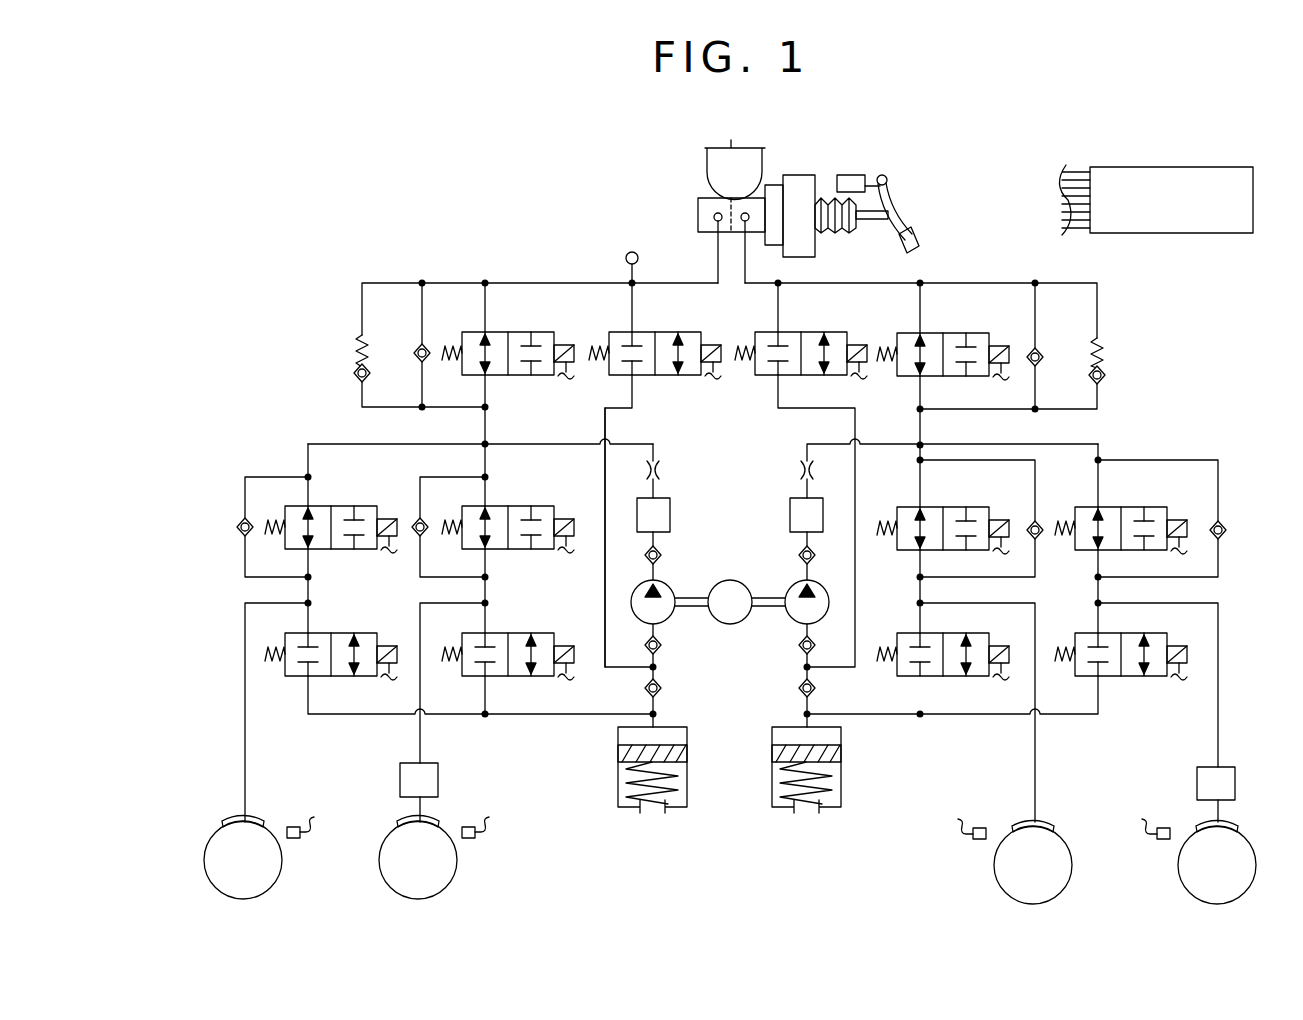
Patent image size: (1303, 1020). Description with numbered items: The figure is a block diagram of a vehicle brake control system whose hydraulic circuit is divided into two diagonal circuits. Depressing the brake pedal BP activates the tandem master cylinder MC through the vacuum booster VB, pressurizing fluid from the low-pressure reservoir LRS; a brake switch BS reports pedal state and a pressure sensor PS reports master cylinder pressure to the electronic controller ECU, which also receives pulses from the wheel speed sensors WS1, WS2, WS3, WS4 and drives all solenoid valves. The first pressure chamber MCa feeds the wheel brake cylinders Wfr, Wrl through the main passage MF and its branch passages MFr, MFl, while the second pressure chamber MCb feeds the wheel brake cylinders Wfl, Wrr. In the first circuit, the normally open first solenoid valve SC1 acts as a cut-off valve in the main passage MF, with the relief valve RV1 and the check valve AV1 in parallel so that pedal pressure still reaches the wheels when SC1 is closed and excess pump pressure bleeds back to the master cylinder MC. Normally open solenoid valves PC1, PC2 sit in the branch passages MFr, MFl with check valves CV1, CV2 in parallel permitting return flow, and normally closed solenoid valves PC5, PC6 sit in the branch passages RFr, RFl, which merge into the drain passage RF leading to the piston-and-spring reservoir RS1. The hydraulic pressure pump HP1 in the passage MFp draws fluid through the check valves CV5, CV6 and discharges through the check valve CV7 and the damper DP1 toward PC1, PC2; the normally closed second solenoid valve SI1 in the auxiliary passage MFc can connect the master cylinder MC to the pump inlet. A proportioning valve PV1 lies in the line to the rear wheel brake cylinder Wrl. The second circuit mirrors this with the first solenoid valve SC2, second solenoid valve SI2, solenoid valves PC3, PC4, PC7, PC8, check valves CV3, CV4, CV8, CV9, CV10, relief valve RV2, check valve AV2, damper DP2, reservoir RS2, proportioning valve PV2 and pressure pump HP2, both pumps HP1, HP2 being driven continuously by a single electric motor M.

The low-pressure reservoir LRS is at (708, 168).
The master cylinder MC is at (698, 209).
The first pressure chamber MCa is at (715, 232).
The second pressure chamber MCb is at (752, 232).
The vacuum booster VB is at (815, 245).
The brake switch BS is at (848, 175).
The brake pedal BP is at (896, 213).
The pressure sensor PS is at (626, 257).
The electronic controller ECU is at (1156, 200).
The relief valve RV1 is at (356, 356).
The relief valve RV2 is at (1104, 370).
The check valve AV1 is at (414, 355).
The check valve AV2 is at (1043, 355).
The first solenoid valve SC1 is at (508, 333).
The first solenoid valve SC2 is at (945, 334).
The second solenoid valve SI1 is at (655, 333).
The second solenoid valve SI2 is at (803, 333).
The main passage MF is at (485, 437).
The branch passage MFr is at (309, 470).
The branch passage MFl is at (486, 470).
The auxiliary passage MFc is at (607, 440).
The passage MFp is at (655, 456).
The damper DP1 is at (672, 517).
The damper DP2 is at (790, 517).
The check valve CV1 is at (250, 517).
The check valve CV2 is at (425, 517).
The check valve CV3 is at (1027, 530).
The check valve CV4 is at (1210, 530).
The check valve CV5 is at (662, 688).
The check valve CV6 is at (662, 645).
The check valve CV7 is at (662, 555).
The check valve CV8 is at (800, 688).
The check valve CV9 is at (800, 645).
The check valve CV10 is at (800, 555).
The hydraulic pressure pump HP1 is at (670, 587).
The pressure pump HP2 is at (792, 587).
The electric motor M is at (730, 602).
The reservoir RS1 is at (618, 754).
The reservoir RS2 is at (842, 754).
The drain passage RF is at (517, 716).
The branch passage RFr is at (346, 716).
The branch passage RFl is at (486, 700).
The solenoid valve PC1 is at (331, 506).
The solenoid valve PC2 is at (508, 506).
The solenoid valve PC3 is at (943, 507).
The solenoid valve PC4 is at (1121, 507).
The solenoid valve PC5 is at (332, 633).
The solenoid valve PC6 is at (509, 633).
The solenoid valve PC7 is at (943, 633).
The solenoid valve PC8 is at (1121, 633).
The proportioning valve PV1 is at (400, 780).
The proportioning valve PV2 is at (1197, 784).
The wheel brake cylinder Wfr is at (226, 822).
The wheel brake cylinder Wrl is at (402, 822).
The wheel brake cylinder Wfl is at (1048, 826).
The wheel brake cylinder Wrr is at (1232, 826).
The wheel speed sensor WS1 is at (293, 838).
The wheel speed sensor WS2 is at (468, 838).
The wheel speed sensor WS3 is at (982, 839).
The wheel speed sensor WS4 is at (1166, 839).